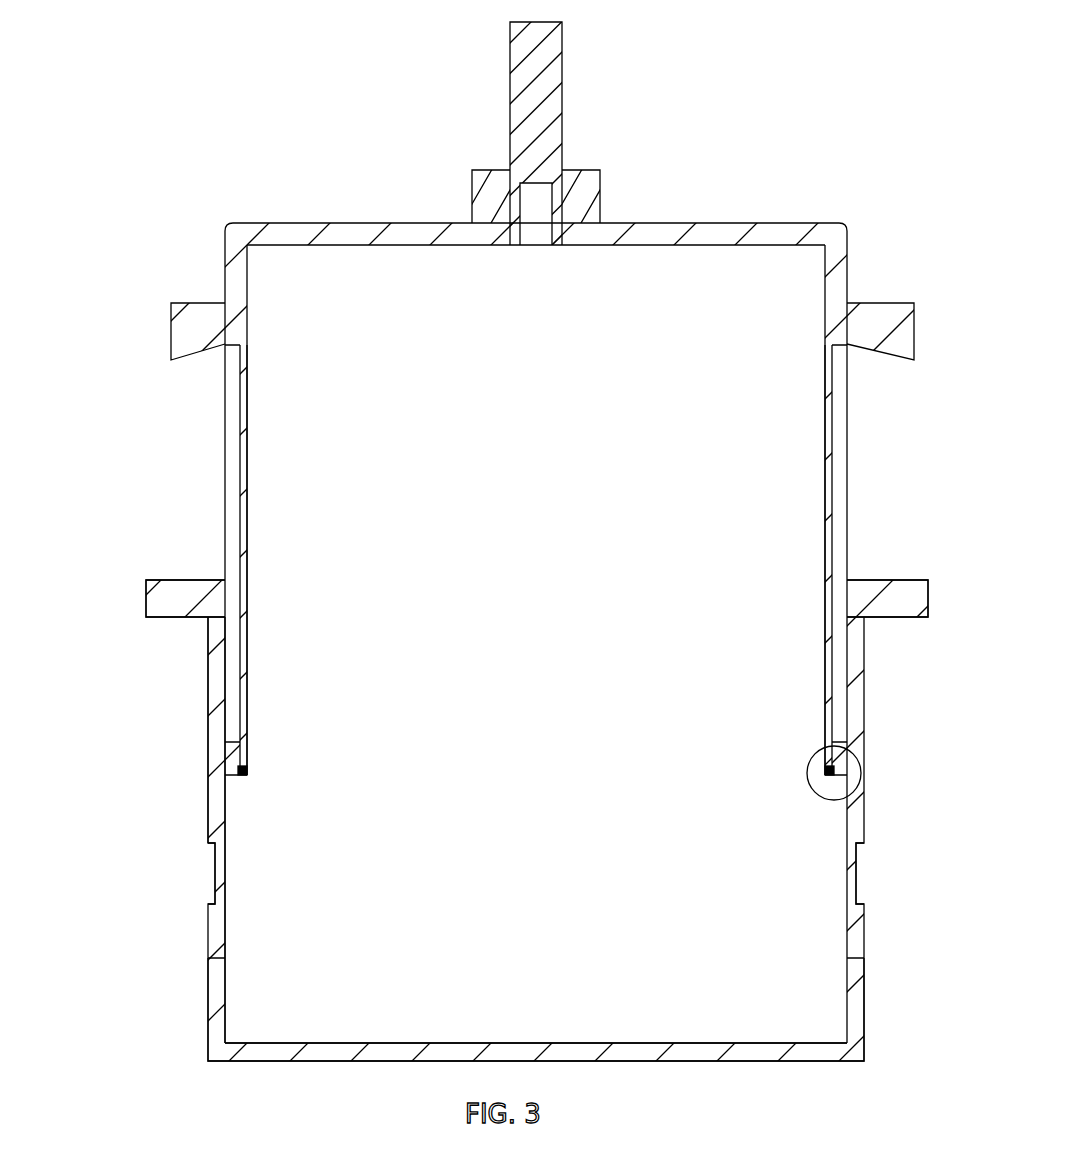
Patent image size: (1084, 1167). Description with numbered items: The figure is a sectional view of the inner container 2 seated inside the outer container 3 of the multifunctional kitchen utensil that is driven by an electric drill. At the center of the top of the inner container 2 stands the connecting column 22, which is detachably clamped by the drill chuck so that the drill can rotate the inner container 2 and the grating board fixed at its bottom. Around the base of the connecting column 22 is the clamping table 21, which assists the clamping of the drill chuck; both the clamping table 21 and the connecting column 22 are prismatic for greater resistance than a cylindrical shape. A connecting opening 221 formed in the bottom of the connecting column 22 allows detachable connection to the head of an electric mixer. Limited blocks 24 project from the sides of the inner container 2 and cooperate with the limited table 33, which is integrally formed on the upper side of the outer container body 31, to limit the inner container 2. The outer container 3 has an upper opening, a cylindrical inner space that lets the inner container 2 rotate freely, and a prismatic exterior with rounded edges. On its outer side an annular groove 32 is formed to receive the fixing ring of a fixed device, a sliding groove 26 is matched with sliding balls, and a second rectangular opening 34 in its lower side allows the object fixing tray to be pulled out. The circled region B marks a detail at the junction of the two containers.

The inner container 2 is at (365, 507).
The clamping table 21 is at (585, 195).
The connecting column 22 is at (535, 125).
The connecting opening 221 is at (540, 212).
The limited block 24 is at (193, 332).
The sliding groove 26 is at (240, 448).
The outer container 3 is at (378, 893).
The outer container body 31 is at (220, 730).
The annular groove 32 is at (858, 878).
The limited table 33 is at (178, 603).
The second rectangular opening 34 is at (853, 1015).
The detail B is at (857, 780).